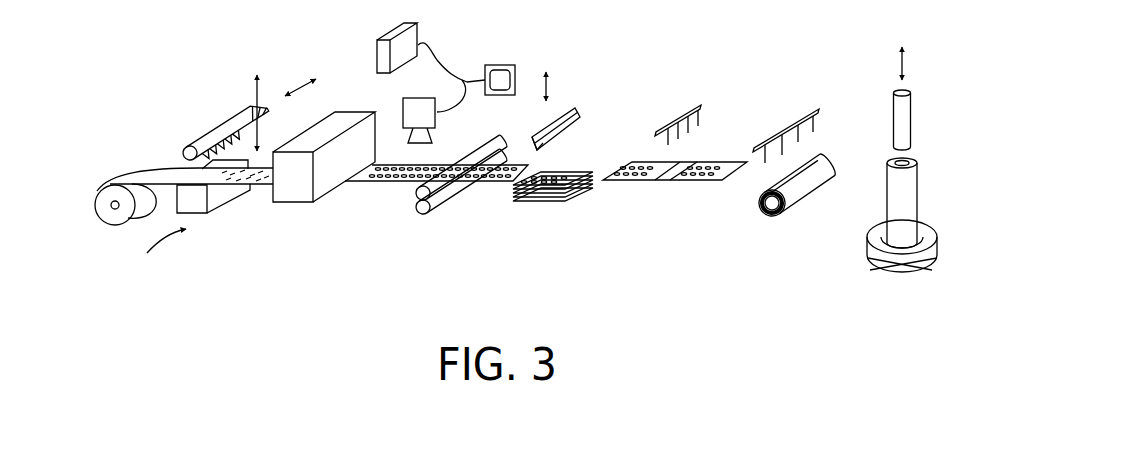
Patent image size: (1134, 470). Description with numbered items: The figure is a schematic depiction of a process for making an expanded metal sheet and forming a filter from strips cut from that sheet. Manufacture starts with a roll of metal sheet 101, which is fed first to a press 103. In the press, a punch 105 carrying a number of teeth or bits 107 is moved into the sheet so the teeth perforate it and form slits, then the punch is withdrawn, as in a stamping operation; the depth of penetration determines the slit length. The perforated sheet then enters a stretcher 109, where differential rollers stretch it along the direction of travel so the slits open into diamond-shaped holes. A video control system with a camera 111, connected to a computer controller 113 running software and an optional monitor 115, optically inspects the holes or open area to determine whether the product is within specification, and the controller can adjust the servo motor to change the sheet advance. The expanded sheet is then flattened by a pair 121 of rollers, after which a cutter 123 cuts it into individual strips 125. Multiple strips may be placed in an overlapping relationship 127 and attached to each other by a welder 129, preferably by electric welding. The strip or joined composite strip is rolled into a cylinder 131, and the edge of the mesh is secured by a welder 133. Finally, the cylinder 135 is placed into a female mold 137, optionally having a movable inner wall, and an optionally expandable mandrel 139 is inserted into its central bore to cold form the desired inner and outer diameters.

The roll of metal sheet 101 is at (111, 223).
The press 103 is at (154, 247).
The punch 105 is at (225, 122).
The teeth or bits 107 is at (193, 160).
The stretcher 109 is at (288, 202).
The camera 111 is at (429, 122).
The computer controller 113 is at (398, 30).
The monitor 115 is at (500, 65).
The pair of rollers 121 is at (420, 214).
The cutter 123 is at (578, 108).
The individual strips 125 is at (538, 203).
The overlapping relationship of strips 127 is at (688, 182).
The welder 129 is at (682, 112).
The cylinder 131 is at (768, 219).
The welder 133 is at (800, 115).
The cylinder 135 is at (918, 190).
The female mold 137 is at (938, 254).
The mandrel 139 is at (912, 118).